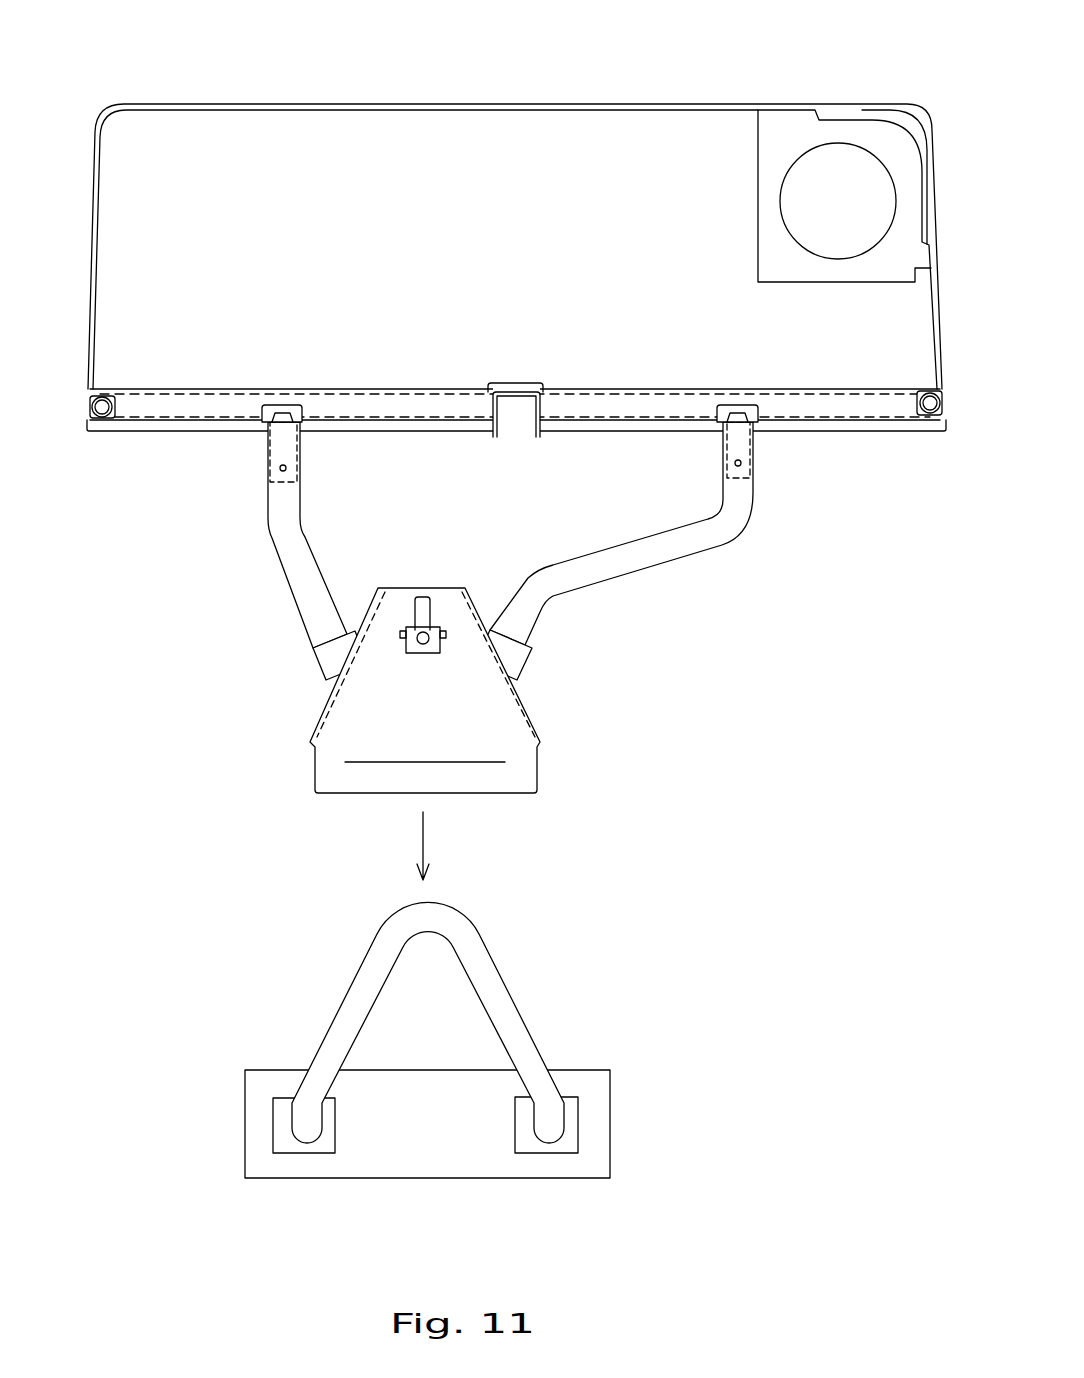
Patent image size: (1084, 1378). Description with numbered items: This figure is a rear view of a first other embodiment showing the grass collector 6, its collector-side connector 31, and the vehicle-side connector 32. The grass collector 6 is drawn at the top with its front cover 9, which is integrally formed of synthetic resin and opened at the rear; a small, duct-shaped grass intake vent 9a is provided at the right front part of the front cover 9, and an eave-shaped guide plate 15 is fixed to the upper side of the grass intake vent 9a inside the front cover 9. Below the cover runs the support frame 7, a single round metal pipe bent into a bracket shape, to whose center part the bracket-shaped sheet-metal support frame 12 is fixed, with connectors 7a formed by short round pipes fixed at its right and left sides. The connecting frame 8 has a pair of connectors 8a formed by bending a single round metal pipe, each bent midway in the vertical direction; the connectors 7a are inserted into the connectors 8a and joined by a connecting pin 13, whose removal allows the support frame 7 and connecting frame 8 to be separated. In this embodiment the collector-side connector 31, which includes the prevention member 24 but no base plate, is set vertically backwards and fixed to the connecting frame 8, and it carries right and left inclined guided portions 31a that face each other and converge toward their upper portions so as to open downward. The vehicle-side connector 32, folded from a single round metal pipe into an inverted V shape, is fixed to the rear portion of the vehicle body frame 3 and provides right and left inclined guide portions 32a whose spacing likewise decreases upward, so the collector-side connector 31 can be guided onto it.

The grass collector 6 is at (496, 218).
The front cover 9 is at (496, 217).
The grass intake vent 9a is at (811, 206).
The guide plate 15 is at (855, 114).
The support frame 7 is at (90, 407).
The connectors 7a is at (282, 450).
The support frame 12 is at (503, 383).
The connecting pin 13 is at (280, 468).
The connecting frame 8 is at (672, 563).
The connectors 8a is at (283, 508).
The prevention member 24 is at (423, 597).
The collector-side connector 31 is at (427, 689).
The inclined guided portions 31a is at (327, 703).
The vehicle-side connector 32 is at (320, 1117).
The inclined guide portions 32a is at (328, 1007).
The vehicle body frame 3 is at (427, 1073).